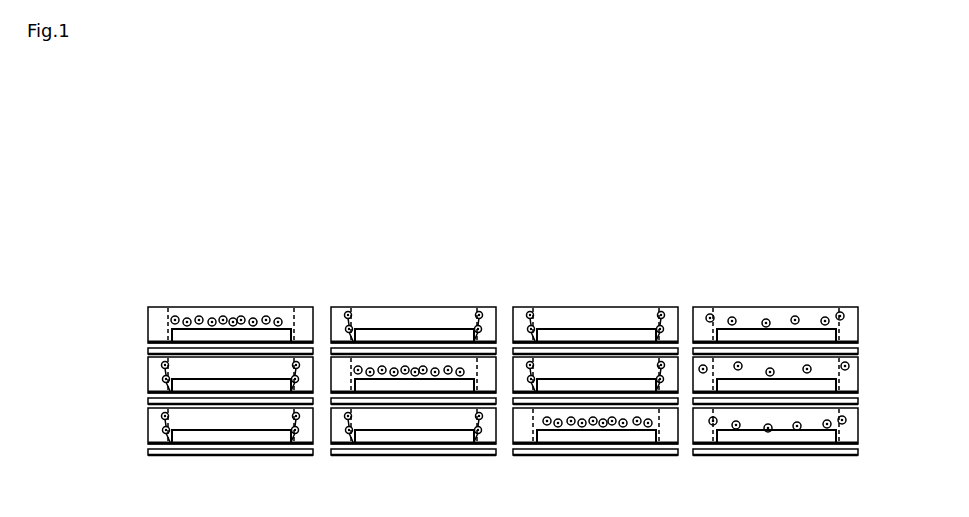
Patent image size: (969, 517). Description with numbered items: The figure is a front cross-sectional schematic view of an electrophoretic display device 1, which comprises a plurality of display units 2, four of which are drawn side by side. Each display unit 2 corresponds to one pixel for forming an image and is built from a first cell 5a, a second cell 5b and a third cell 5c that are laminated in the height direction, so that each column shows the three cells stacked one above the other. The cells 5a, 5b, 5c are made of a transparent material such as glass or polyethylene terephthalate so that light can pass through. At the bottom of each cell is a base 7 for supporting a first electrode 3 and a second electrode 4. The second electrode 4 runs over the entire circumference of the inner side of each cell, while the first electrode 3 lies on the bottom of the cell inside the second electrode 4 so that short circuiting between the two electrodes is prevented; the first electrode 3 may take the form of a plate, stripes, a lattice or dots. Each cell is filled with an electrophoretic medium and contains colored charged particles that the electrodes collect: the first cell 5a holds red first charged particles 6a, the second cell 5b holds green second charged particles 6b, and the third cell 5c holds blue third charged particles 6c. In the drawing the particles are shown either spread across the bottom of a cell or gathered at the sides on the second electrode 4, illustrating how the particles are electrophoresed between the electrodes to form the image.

The electrophoretic display device 1 is at (606, 163).
The display unit 2 is at (229, 294).
The first electrode 3 is at (232, 435).
The second electrode 4 is at (312, 435).
The first cell 5a is at (147, 322).
The second cell 5b is at (147, 368).
The third cell 5c is at (147, 418).
The first charged particles 6a is at (200, 315).
The second charged particles 6b is at (162, 380).
The third charged particles 6c is at (162, 431).
The base 7 is at (421, 452).